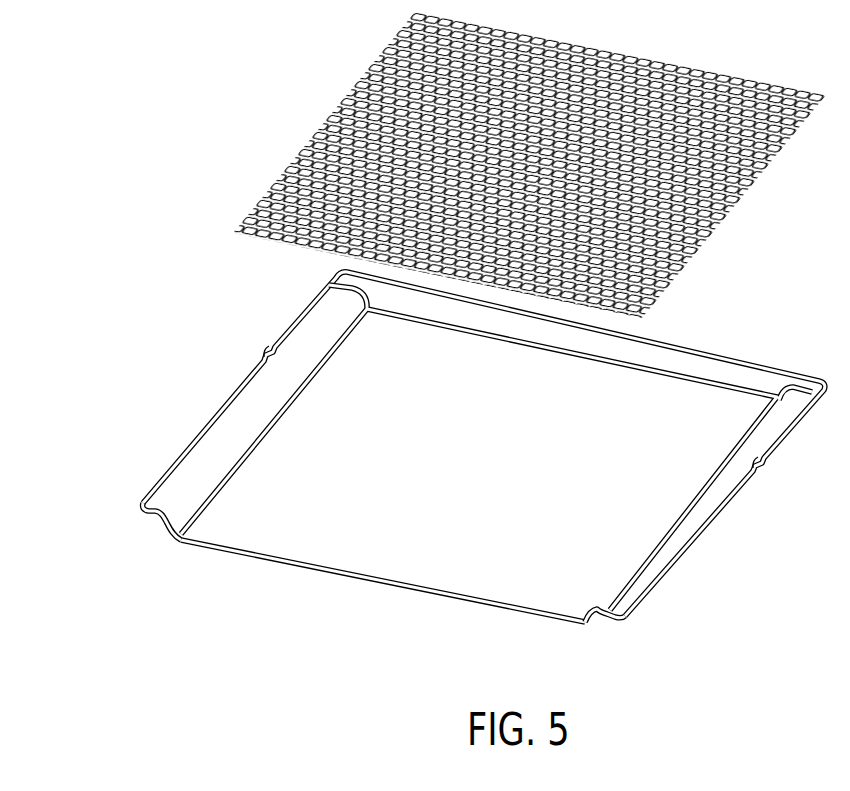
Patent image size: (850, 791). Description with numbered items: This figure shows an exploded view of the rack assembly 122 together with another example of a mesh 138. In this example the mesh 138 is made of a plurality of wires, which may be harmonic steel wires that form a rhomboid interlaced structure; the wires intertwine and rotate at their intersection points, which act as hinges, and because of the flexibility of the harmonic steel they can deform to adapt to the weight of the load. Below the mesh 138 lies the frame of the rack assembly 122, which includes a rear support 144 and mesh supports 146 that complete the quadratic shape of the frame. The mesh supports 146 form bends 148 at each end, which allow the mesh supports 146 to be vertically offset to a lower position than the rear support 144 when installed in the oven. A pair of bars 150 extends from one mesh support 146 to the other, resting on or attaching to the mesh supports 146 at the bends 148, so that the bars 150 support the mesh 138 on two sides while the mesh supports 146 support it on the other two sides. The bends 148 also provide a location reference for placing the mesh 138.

The rack assembly 122 is at (136, 409).
The mesh 138 is at (348, 130).
The rear support 144 is at (690, 332).
The mesh supports 146 is at (580, 360).
The bends 148 is at (153, 517).
The bars 150 is at (317, 367).